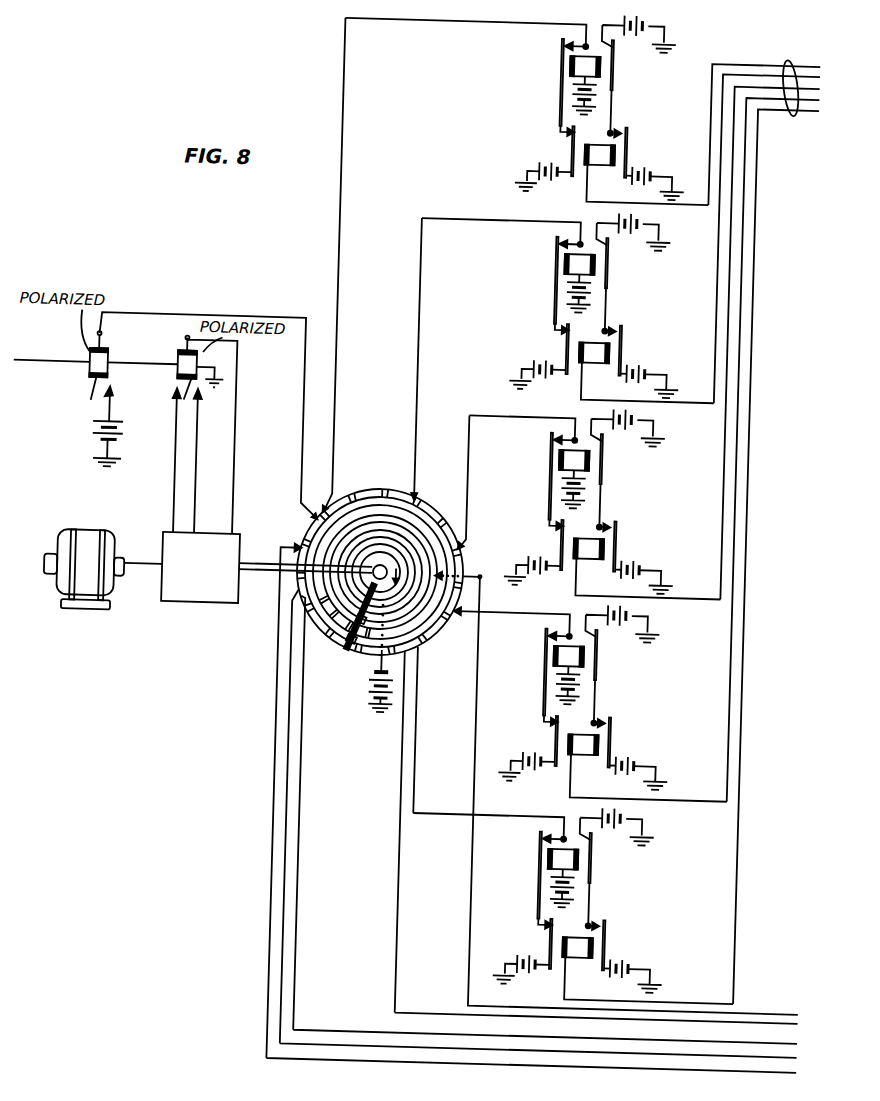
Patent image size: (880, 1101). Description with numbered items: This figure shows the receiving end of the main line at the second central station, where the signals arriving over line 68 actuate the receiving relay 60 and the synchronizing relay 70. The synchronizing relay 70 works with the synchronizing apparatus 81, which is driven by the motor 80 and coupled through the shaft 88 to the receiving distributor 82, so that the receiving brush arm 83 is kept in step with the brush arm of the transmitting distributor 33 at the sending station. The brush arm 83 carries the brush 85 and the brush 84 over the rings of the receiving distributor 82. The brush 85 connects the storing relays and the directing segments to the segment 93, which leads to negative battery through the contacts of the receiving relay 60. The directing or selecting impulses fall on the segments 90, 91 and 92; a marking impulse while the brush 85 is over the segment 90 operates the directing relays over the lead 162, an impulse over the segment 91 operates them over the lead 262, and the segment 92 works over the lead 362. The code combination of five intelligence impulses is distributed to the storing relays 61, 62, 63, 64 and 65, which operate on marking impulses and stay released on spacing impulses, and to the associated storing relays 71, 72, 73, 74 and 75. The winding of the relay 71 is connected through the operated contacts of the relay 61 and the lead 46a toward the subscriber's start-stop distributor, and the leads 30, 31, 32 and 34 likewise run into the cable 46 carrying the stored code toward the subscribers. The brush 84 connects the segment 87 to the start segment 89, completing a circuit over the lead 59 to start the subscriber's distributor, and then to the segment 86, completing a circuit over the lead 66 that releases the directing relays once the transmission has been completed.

The lead 30 is at (690, 204).
The lead 31 is at (695, 400).
The lead 32 is at (685, 592).
The transmitting distributor 33 is at (690, 794).
The lead 34 is at (697, 996).
The cable 46 is at (790, 99).
The lead 46a is at (698, 92).
The lead 59 is at (786, 1004).
The receiving relay 60 is at (103, 362).
The storing relay 61 is at (509, 73).
The storing relay 62 is at (545, 272).
The storing relay 63 is at (565, 468).
The storing relay 64 is at (557, 665).
The storing relay 65 is at (532, 867).
The lead 66 is at (792, 1010).
The line 68 is at (48, 350).
The synchronizing relay 70 is at (176, 366).
The storing relay 71 is at (612, 165).
The storing relay 72 is at (612, 363).
The storing relay 73 is at (612, 558).
The storing relay 74 is at (613, 757).
The storing relay 75 is at (613, 960).
The motor 80 is at (85, 538).
The synchronizing apparatus 81 is at (193, 608).
The receiving distributor 82 is at (360, 560).
The receiving brush arm 83 is at (387, 597).
The brush 84 is at (380, 657).
The brush 85 is at (352, 660).
The segment 86 is at (370, 585).
The segment 87 is at (400, 550).
The shaft 88 is at (257, 567).
The start segment 89 is at (422, 572).
The segment 90 is at (332, 632).
The segment 91 is at (297, 592).
The segment 92 is at (301, 541).
The segment 93 is at (388, 505).
The lead 162 is at (306, 765).
The lead 262 is at (293, 795).
The lead 362 is at (280, 705).